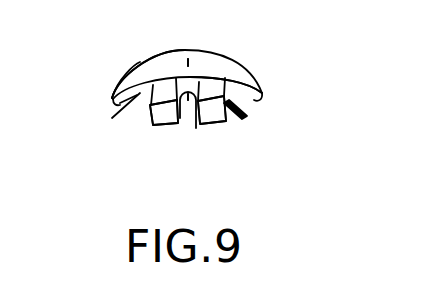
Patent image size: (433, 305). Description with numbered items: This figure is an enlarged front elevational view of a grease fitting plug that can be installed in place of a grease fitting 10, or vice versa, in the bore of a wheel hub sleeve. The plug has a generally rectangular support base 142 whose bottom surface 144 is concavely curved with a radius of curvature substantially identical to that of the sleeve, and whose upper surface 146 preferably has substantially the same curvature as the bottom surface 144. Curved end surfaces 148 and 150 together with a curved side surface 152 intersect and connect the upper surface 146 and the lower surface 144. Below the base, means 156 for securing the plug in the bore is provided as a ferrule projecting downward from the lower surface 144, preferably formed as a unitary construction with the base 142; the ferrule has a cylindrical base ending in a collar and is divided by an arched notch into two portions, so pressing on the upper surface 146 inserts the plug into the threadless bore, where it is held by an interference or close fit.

The grease fitting 10 is at (188, 52).
The support base 142 is at (214, 56).
The bottom surface 144 is at (120, 105).
The upper surface 146 is at (177, 49).
The curved end surface 148 is at (264, 93).
The curved end surface 150 is at (112, 88).
The curved side surface 152 is at (141, 63).
The means for securing 156 is at (242, 128).